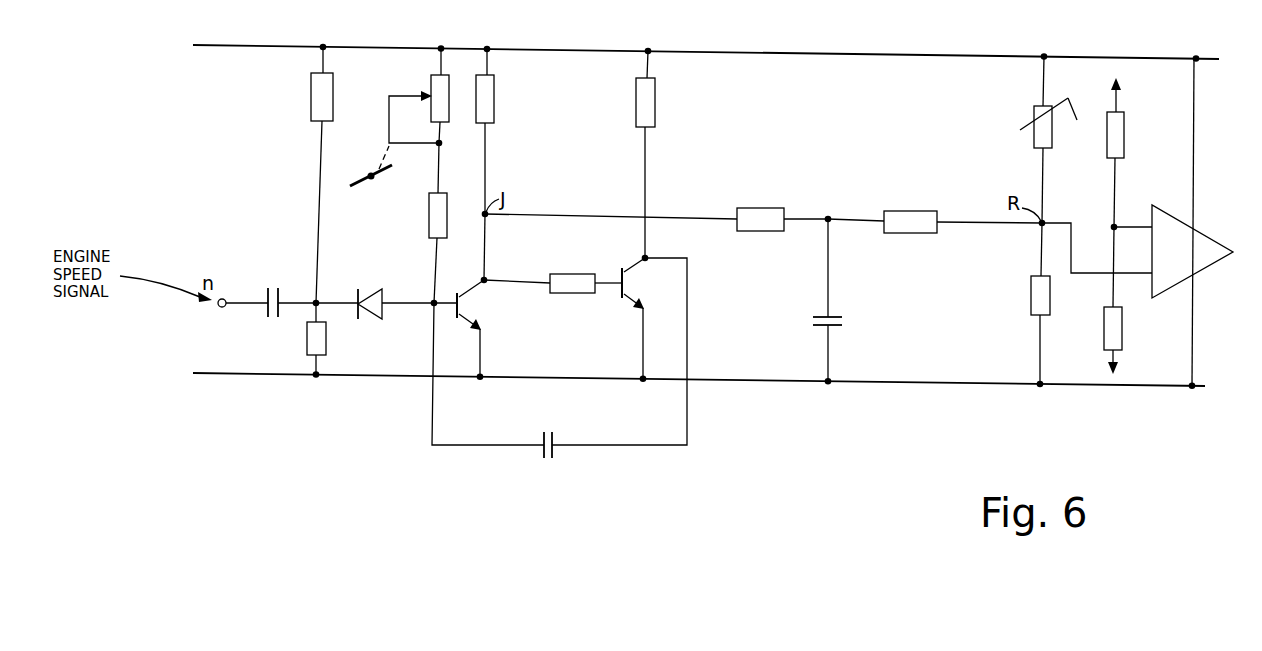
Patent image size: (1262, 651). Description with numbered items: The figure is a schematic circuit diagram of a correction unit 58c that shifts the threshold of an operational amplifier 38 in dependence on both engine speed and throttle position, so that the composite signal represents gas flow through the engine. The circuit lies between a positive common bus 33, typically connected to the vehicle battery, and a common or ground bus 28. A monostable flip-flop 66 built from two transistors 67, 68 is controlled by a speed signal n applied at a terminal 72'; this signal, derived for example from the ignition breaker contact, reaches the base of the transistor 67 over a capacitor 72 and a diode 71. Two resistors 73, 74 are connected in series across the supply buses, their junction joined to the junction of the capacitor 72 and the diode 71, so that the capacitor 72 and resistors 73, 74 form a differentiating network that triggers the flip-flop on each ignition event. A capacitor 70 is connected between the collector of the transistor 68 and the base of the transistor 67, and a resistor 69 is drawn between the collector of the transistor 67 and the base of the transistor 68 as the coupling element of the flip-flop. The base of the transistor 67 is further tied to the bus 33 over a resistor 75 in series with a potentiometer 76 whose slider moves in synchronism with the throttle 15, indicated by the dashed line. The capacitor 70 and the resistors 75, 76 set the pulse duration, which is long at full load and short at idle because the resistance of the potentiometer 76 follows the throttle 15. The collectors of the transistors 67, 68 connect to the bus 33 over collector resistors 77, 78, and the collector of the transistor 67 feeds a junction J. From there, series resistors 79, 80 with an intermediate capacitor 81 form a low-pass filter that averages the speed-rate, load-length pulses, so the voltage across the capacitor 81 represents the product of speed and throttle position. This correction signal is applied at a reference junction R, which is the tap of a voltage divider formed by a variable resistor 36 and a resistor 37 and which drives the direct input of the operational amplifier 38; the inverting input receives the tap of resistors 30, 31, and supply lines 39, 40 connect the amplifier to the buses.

The throttle 15 is at (381, 176).
The common bus 28 is at (905, 385).
The resistor 30 is at (1122, 333).
The resistor 31 is at (1124, 140).
The positive common bus 33 is at (836, 53).
The variable resistor 36 is at (1052, 141).
The resistor 37 is at (1050, 300).
The operational amplifier 38 is at (1186, 257).
The power supply line 39 is at (1195, 152).
The power supply line 40 is at (1193, 322).
The correction unit 58c is at (853, 143).
The monostable flip-flop 66 is at (559, 357).
The transistor 67 is at (481, 330).
The transistor 68 is at (645, 309).
The resistor 69 is at (580, 274).
The capacitor 70 is at (553, 450).
The diode 71 is at (379, 291).
The capacitor 72 is at (283, 285).
The terminal 72' is at (218, 324).
The resistor 73 is at (333, 110).
The resistor 74 is at (327, 338).
The resistor 75 is at (452, 204).
The potentiometer 76 is at (449, 102).
The collector resistor 77 is at (490, 105).
The collector resistor 78 is at (652, 108).
The resistor 79 is at (762, 231).
The resistor 80 is at (908, 233).
The capacitor 81 is at (822, 330).